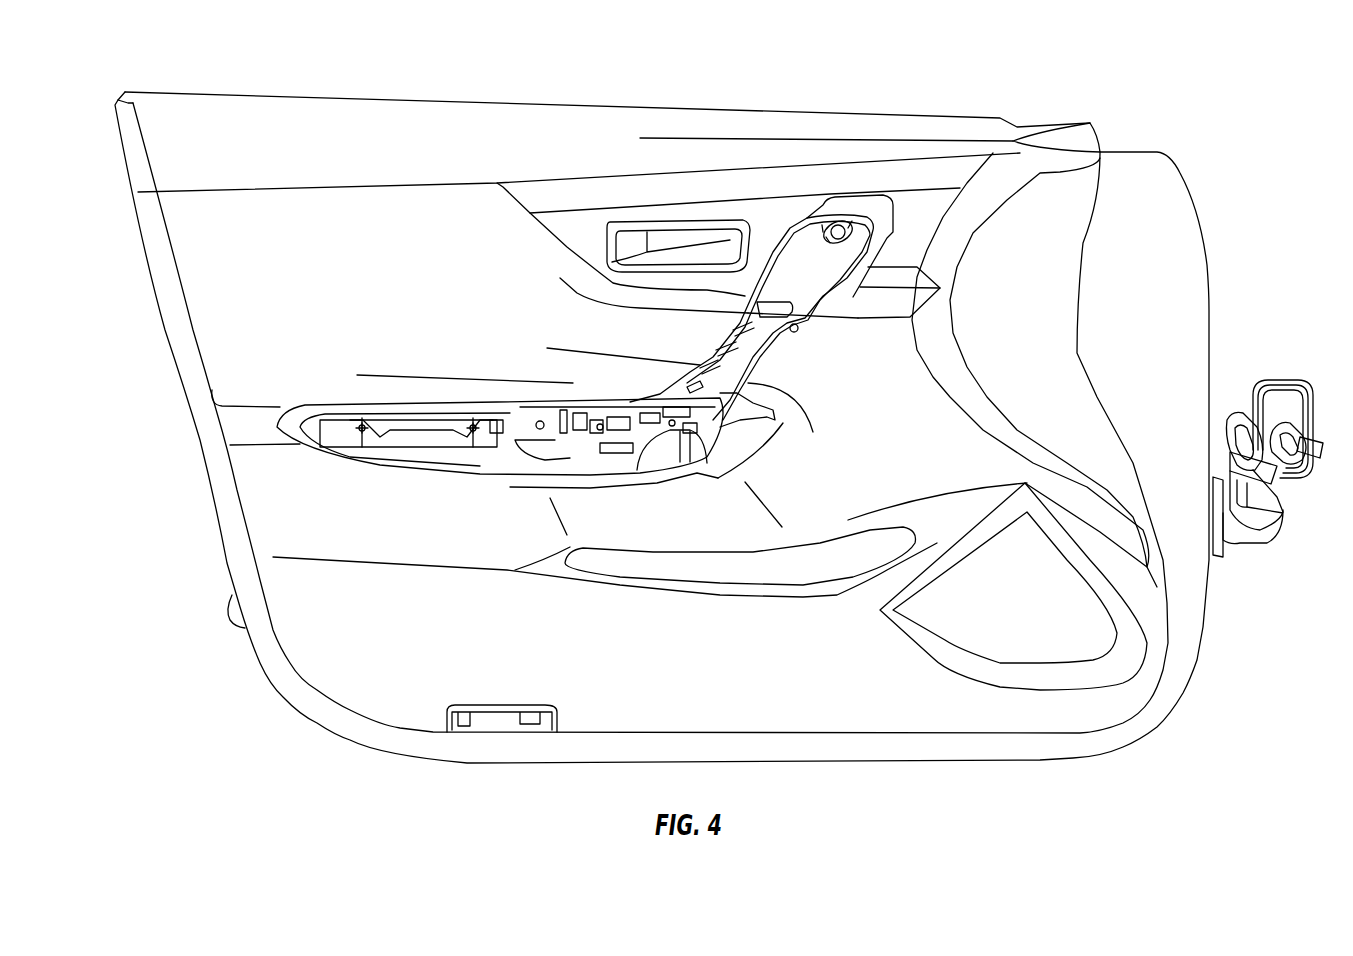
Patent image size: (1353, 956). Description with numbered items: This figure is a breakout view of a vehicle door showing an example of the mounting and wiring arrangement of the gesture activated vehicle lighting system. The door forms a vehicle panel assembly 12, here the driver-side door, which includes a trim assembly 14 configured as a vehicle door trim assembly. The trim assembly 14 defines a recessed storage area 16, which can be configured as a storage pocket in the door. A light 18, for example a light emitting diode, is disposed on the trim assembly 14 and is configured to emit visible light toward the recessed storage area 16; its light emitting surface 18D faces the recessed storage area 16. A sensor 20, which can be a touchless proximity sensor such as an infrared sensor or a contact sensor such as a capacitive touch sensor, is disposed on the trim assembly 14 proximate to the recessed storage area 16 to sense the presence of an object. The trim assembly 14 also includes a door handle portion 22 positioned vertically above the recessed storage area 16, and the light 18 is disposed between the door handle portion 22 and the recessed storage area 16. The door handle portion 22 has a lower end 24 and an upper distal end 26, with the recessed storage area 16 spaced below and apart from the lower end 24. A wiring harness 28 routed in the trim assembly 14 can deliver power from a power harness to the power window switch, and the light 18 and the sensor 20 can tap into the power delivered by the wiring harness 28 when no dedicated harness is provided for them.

The vehicle panel assembly 12 is at (888, 82).
The trim assembly 14 is at (375, 203).
The recessed storage area 16 is at (762, 573).
The light 18 is at (798, 325).
The light emitting surface 18D is at (798, 332).
The sensor 20 is at (702, 472).
The door handle portion 22 is at (789, 334).
The lower end 24 is at (463, 478).
The upper distal end 26 is at (878, 246).
The wiring harness 28 is at (538, 424).